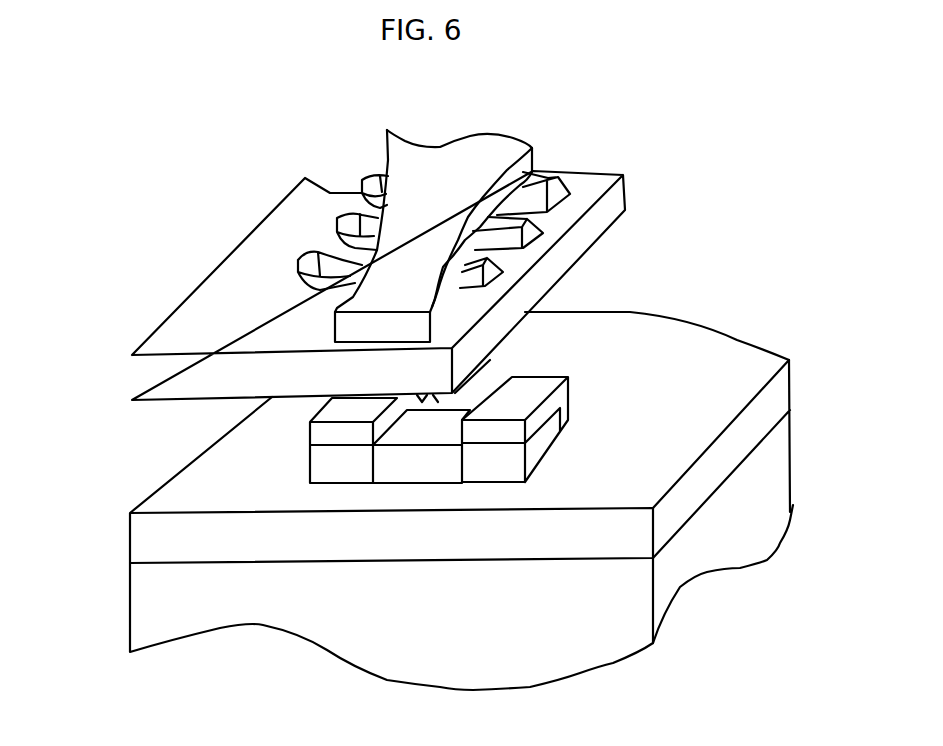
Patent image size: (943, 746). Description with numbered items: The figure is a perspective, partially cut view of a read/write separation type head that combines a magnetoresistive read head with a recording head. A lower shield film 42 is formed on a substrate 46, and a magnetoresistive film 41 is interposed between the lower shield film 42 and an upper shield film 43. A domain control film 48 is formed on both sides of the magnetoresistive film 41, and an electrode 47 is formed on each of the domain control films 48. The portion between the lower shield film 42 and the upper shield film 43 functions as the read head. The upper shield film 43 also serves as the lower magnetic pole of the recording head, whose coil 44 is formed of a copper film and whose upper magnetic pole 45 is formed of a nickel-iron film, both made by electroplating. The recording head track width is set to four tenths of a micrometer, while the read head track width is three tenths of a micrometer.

The magnetoresistive film 41 is at (403, 463).
The lower shield film 42 is at (147, 535).
The upper shield film 43 is at (155, 373).
The coil 44 is at (552, 197).
The upper magnetic pole 45 is at (340, 318).
The substrate 46 is at (147, 618).
The electrode 47 is at (537, 393).
The domain control film 48 is at (653, 507).